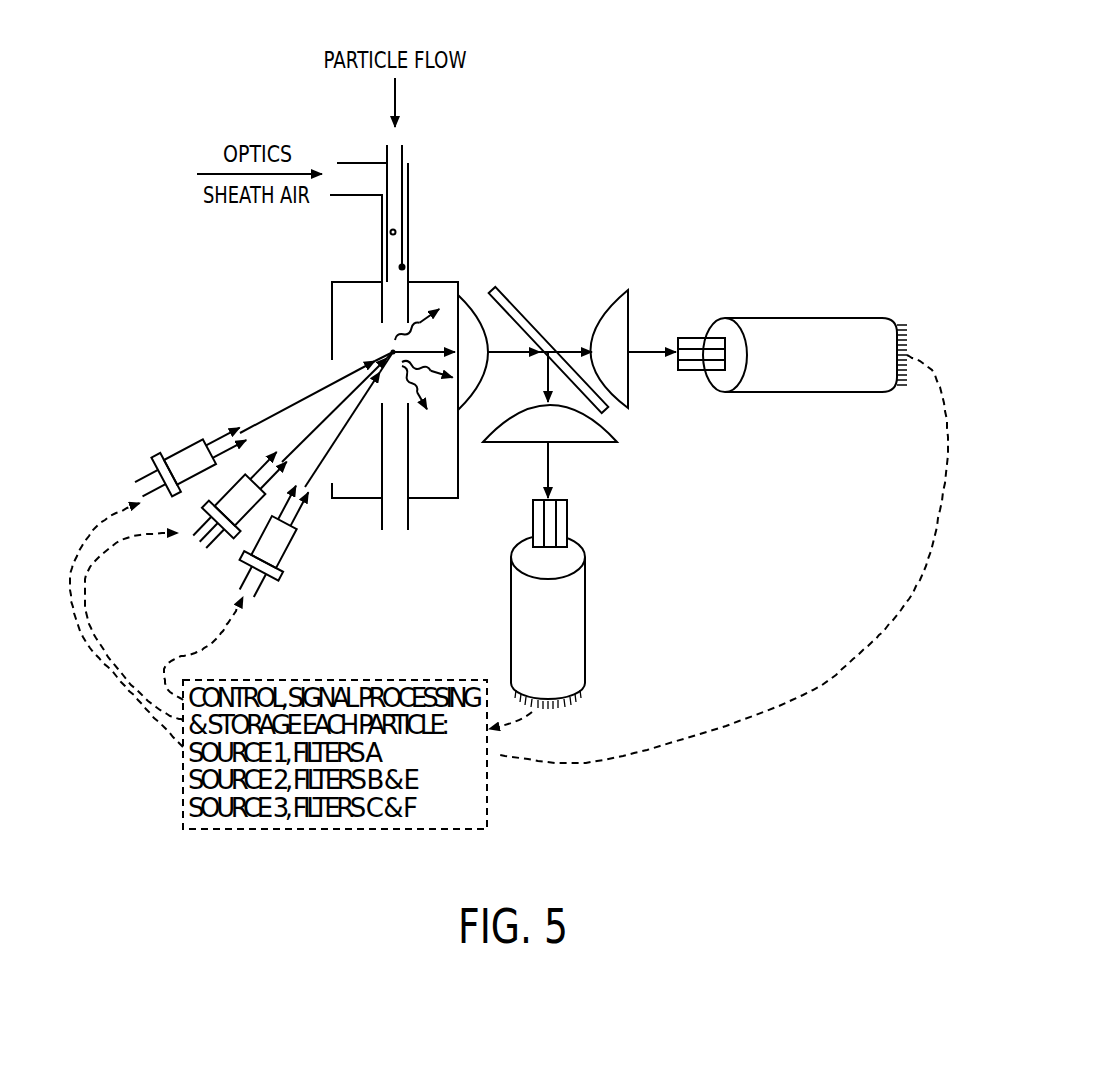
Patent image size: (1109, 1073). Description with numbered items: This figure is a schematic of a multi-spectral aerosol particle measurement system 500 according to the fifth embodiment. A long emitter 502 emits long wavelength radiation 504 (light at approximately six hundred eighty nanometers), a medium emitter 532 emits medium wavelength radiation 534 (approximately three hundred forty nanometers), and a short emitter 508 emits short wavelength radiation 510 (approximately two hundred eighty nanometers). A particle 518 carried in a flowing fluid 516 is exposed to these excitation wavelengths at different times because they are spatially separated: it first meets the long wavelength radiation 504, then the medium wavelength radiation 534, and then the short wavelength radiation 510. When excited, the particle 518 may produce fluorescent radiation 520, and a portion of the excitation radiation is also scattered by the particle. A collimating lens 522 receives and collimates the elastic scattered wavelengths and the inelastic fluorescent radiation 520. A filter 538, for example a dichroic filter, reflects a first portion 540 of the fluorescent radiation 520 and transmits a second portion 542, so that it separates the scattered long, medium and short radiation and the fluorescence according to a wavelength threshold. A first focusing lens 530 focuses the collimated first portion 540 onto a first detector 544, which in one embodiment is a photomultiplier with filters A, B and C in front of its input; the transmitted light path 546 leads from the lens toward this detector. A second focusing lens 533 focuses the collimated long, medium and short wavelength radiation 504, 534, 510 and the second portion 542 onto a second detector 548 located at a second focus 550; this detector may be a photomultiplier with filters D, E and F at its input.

The multi-spectral aerosol particle measurement system 500 is at (752, 84).
The long emitter 502 is at (193, 440).
The long wavelength radiation 504 is at (297, 403).
The short emitter 508 is at (292, 565).
The short wavelength radiation 510 is at (312, 522).
The flowing fluid 516 is at (396, 144).
The particle 518 is at (392, 352).
The fluorescent radiation 520 is at (455, 366).
The collimating lens 522 is at (464, 322).
The first focusing lens 530 is at (618, 310).
The medium emitter 532 is at (224, 545).
The second focusing lens 533 is at (612, 441).
The medium wavelength radiation 534 is at (297, 447).
The filter 538 is at (522, 312).
The first portion of fluorescent radiation 540 is at (645, 348).
The second portion of fluorescent radiation 542 is at (552, 463).
The first detector 544 is at (865, 330).
The transmitted light path 546 is at (657, 350).
The second detector 548 is at (572, 672).
The second focus 550 is at (546, 490).